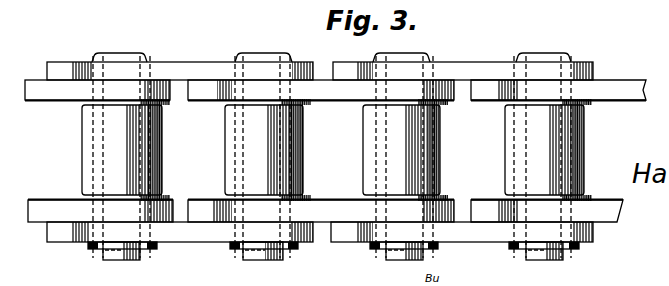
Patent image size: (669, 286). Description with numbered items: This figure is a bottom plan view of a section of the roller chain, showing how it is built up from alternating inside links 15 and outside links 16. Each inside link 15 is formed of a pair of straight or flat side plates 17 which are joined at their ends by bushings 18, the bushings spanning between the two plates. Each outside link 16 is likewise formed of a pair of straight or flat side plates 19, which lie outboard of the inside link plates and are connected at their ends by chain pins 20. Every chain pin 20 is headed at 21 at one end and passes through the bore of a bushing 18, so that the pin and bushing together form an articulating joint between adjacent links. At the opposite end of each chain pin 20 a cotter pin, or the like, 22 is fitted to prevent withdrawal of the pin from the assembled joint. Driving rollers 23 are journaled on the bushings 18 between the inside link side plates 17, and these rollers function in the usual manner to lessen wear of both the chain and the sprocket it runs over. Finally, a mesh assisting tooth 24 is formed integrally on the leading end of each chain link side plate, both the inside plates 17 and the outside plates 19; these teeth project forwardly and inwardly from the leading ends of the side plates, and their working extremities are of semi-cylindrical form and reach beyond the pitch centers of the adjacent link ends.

The inside link 15 is at (47, 106).
The outside link 16 is at (188, 60).
The side plate 17 is at (48, 211).
The bushing 18 is at (222, 160).
The side plate 19 is at (229, 62).
The chain pin 20 is at (138, 261).
The head 21 is at (133, 43).
The cotter pin 22 is at (89, 250).
The driving roller 23 is at (166, 136).
The mesh assisting tooth 24 is at (64, 43).